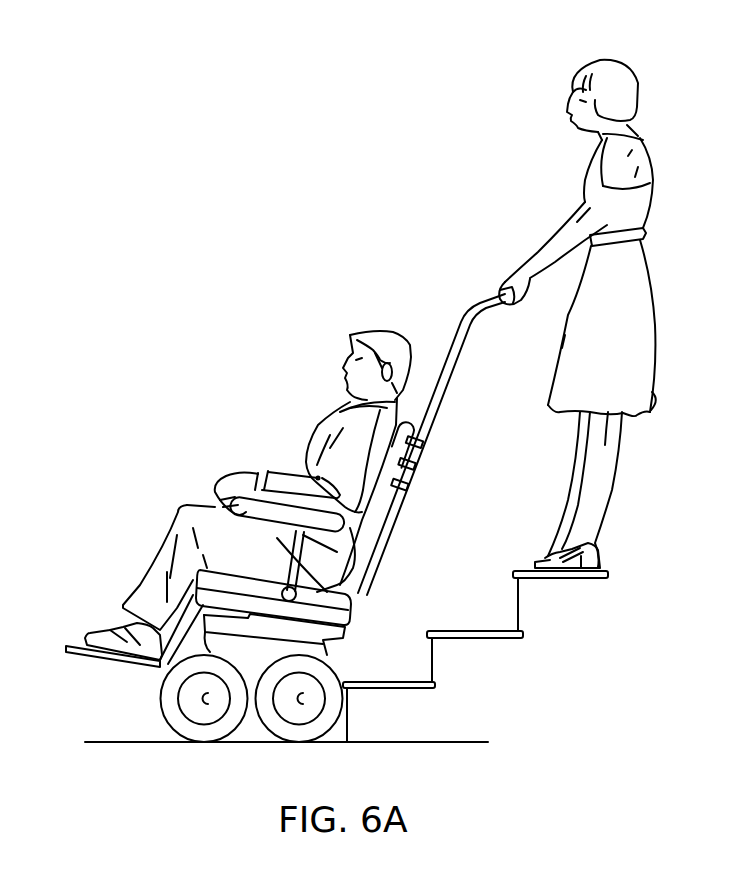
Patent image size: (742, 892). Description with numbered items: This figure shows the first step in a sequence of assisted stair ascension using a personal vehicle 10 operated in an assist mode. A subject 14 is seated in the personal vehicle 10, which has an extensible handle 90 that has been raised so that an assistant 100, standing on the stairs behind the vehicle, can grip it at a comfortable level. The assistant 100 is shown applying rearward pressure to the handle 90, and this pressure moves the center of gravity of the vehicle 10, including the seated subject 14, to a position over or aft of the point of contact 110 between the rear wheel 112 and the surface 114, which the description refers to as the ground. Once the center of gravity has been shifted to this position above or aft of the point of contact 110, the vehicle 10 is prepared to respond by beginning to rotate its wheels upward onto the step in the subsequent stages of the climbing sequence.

The personal vehicle 10 is at (286, 351).
The subject 14 is at (326, 425).
The extensible handle 90 is at (467, 313).
The assistant 100 is at (632, 150).
The point of contact 110 is at (297, 743).
The rear wheel 112 is at (333, 672).
The surface 114 is at (128, 740).